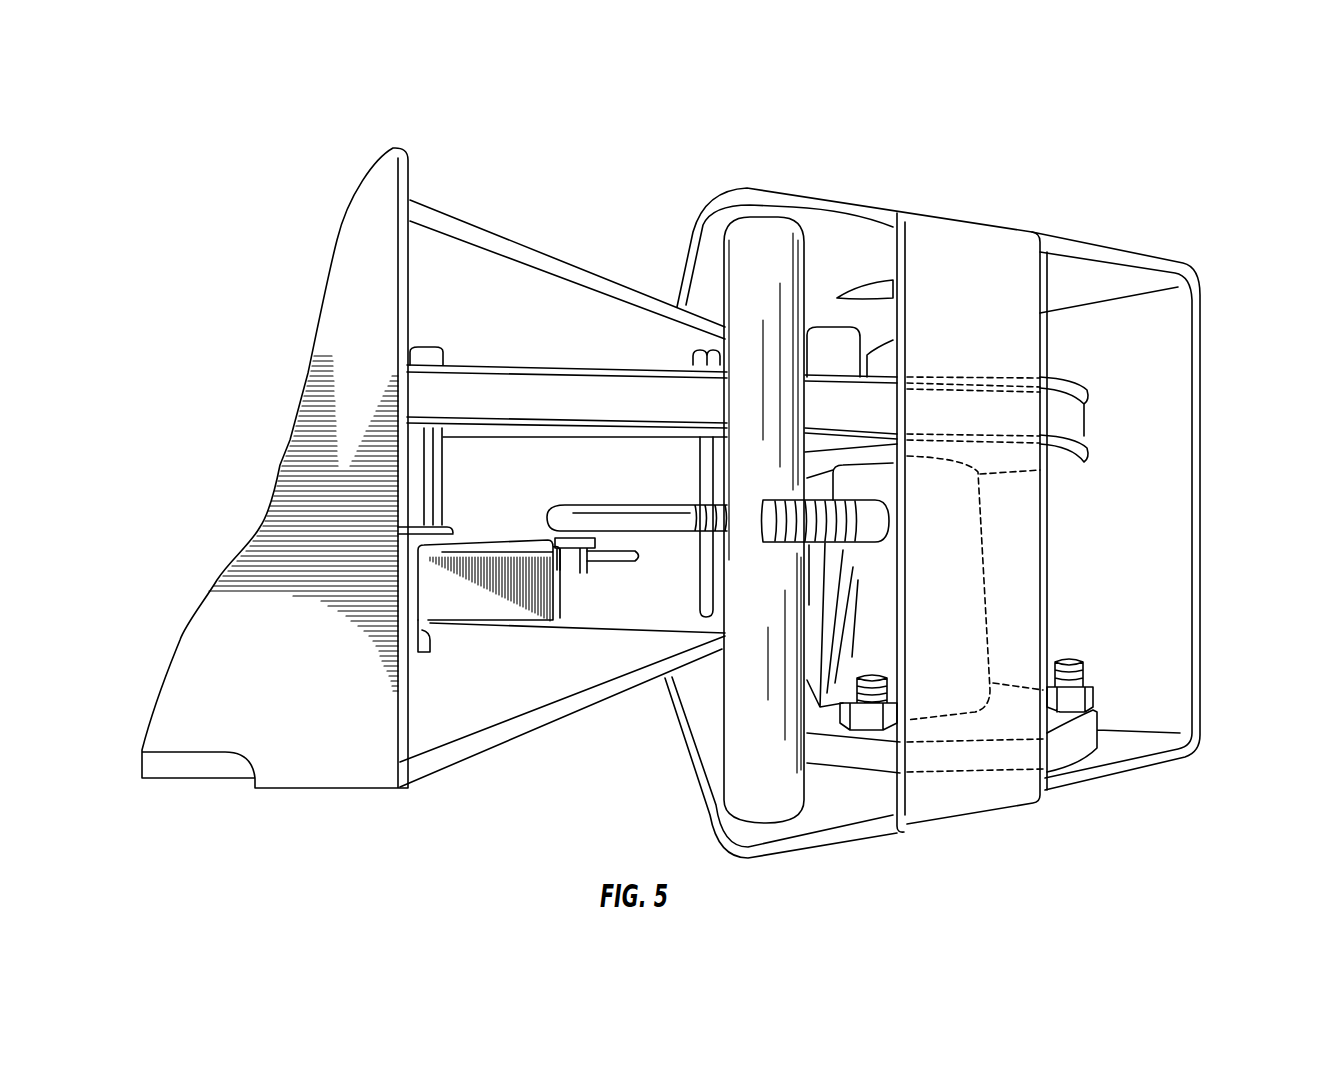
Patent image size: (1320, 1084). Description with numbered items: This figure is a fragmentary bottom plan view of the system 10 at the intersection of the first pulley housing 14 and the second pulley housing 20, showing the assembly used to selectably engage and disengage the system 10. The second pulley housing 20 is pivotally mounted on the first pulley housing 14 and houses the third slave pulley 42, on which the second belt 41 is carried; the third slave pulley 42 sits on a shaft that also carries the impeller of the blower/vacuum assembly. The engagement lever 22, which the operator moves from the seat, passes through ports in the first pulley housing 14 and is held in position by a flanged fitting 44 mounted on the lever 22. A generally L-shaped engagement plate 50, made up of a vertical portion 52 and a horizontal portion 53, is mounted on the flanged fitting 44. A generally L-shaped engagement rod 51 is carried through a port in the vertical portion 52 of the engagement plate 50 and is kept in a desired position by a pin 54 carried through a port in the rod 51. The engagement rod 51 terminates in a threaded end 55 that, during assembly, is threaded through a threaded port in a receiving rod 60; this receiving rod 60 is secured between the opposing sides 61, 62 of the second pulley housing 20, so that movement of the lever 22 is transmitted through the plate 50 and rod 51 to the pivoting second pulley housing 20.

The system 10 is at (740, 140).
The first pulley housing 14 is at (222, 700).
The second pulley housing 20 is at (1080, 780).
The engagement lever 22 is at (417, 453).
The second belt 41 is at (1067, 420).
The third slave pulley 42 is at (1075, 457).
The flanged fitting 44 is at (413, 535).
The engagement plate 50 is at (473, 603).
The engagement rod 51 is at (617, 512).
The vertical portion 52 is at (587, 540).
The horizontal portion 53 is at (522, 607).
The pin 54 is at (617, 563).
The threaded end 55 is at (843, 540).
The receiving rod 60 is at (780, 243).
The opposing side 61 is at (707, 252).
The opposing side 62 is at (817, 827).